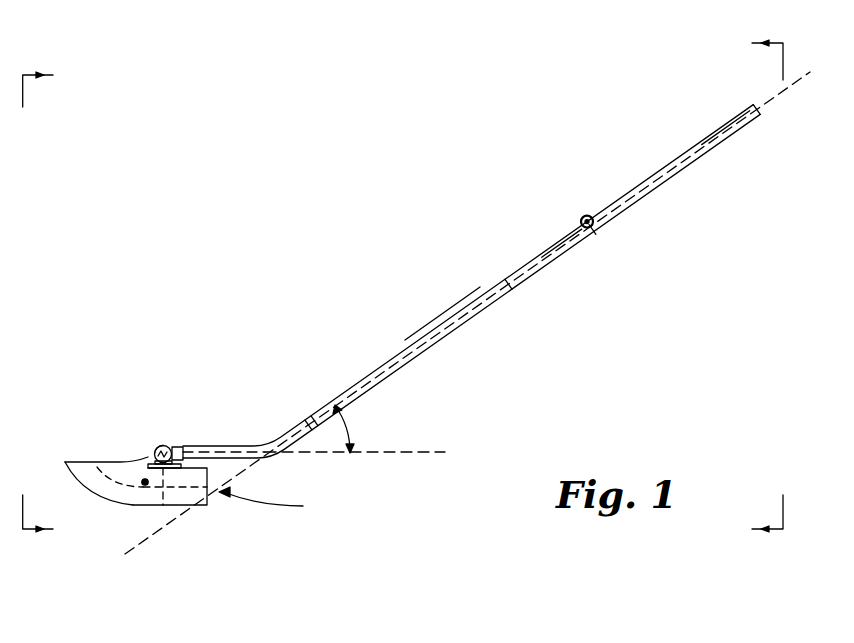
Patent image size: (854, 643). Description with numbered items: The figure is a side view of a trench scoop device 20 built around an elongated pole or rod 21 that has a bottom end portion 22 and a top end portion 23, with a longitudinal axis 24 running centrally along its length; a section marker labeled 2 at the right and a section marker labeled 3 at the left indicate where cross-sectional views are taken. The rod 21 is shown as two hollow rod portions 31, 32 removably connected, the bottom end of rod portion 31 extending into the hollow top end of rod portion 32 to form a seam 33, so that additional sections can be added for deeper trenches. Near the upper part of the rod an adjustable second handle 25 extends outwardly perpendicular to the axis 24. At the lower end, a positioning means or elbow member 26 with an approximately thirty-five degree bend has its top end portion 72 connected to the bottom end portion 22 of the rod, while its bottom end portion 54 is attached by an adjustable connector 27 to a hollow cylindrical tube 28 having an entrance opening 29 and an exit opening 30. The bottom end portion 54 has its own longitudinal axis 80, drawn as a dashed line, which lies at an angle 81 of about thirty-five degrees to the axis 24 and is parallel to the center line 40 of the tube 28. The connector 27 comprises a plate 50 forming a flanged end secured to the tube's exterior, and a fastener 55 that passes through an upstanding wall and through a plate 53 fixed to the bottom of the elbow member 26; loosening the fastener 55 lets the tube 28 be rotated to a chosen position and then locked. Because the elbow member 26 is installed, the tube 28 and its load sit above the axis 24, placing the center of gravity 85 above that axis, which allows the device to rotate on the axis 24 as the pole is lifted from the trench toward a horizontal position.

The section line 2- 2 is at (767, 287).
The section line 3- 3 is at (38, 303).
The trench scoop device 20 is at (471, 257).
The pole or rod 21 is at (420, 337).
The bottom end portion 22 is at (322, 406).
The top end portion 23 is at (735, 120).
The longitudinal axis 24 is at (804, 80).
The adjustable second handle 25 is at (596, 228).
The elbow member 26 is at (230, 446).
The adjustable connector 27 is at (159, 446).
The hollow cylindrical tube 28 is at (144, 492).
The entrance opening 29 is at (274, 502).
The exit opening 30 is at (125, 466).
The rod portion 31 is at (690, 162).
The rod portion 32 is at (452, 330).
The seam 33 is at (508, 289).
The center line 40 is at (206, 470).
The plate 50 is at (168, 470).
The plate 53 is at (158, 416).
The bottom end portion 54 is at (197, 446).
The fastener 55 is at (153, 453).
The top end portion 72 is at (292, 424).
The longitudinal axis 80 is at (410, 455).
The angle 81 is at (352, 448).
The center of gravity 85 is at (142, 484).